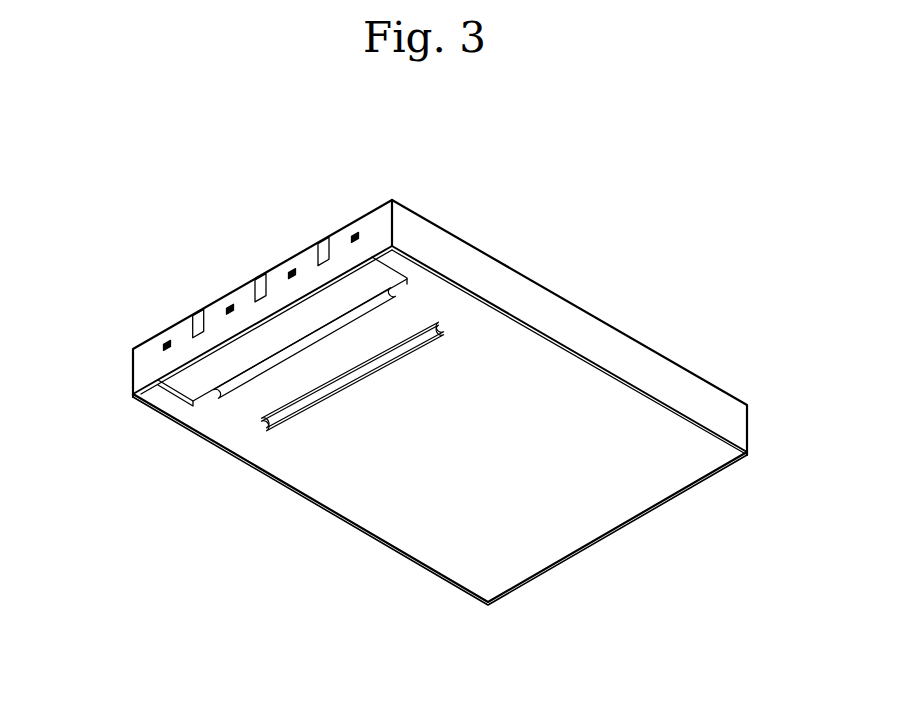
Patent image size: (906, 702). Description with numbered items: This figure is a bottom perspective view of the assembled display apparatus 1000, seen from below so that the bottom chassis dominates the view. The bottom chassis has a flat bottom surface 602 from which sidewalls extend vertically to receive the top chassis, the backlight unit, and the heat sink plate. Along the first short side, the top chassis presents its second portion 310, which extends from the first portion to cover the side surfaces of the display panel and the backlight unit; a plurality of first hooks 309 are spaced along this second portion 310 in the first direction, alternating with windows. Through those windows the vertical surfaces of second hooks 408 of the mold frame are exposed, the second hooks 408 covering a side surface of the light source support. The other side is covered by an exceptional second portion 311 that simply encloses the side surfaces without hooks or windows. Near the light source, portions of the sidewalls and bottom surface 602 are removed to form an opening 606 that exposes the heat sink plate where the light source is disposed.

The display apparatus 1000 is at (614, 219).
The second portion 310 is at (148, 366).
The exceptional second portions 311 is at (577, 326).
The first hook 309 is at (160, 340).
The second hook 408 is at (194, 322).
The bottom surface 602 is at (310, 466).
The opening 606 is at (186, 390).